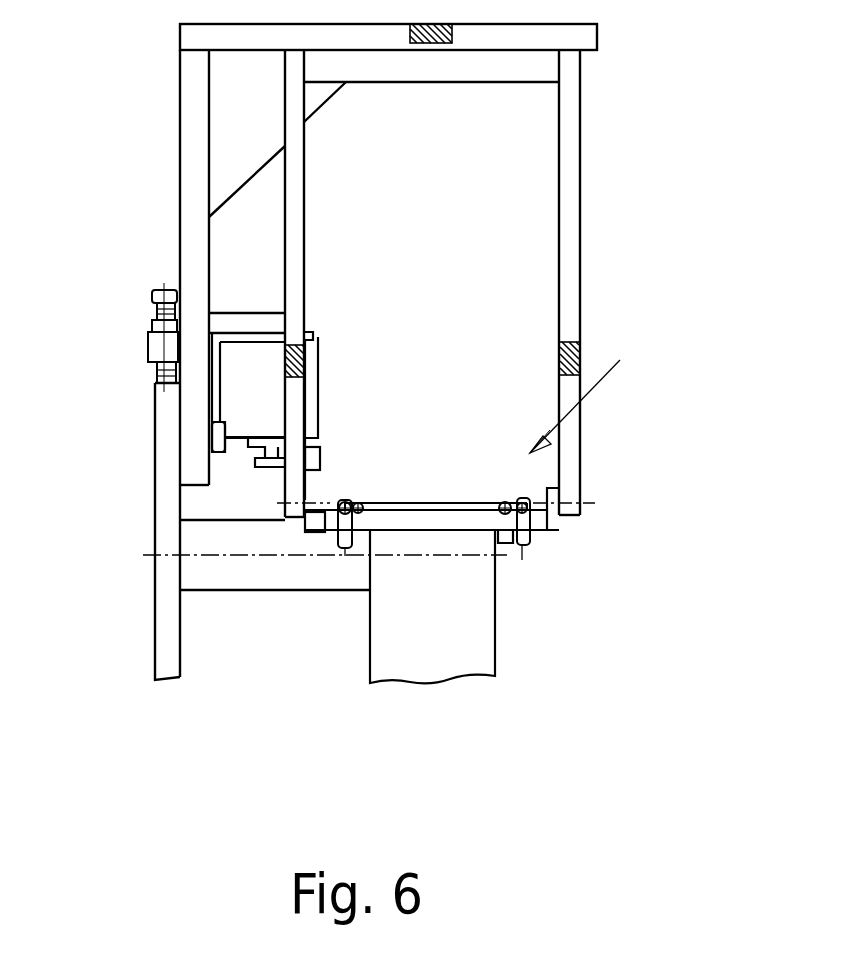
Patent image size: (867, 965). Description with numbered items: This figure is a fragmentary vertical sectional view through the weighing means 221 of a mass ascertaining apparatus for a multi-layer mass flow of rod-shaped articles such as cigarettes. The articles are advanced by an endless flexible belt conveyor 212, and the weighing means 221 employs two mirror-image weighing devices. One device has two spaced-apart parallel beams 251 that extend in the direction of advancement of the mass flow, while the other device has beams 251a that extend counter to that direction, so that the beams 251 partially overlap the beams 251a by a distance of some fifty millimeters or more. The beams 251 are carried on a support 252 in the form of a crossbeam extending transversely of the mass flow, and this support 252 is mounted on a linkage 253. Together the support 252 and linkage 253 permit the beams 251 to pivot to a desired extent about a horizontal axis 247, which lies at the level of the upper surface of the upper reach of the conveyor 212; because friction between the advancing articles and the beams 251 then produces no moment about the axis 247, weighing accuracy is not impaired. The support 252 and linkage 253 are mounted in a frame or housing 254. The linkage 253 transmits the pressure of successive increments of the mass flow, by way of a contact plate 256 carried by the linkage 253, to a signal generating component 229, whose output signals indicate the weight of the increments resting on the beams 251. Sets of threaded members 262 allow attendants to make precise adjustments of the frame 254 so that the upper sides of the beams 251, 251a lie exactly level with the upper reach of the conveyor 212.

The frame 254 is at (568, 282).
The threaded members 262 is at (152, 305).
The signal generating component 229 is at (273, 393).
The linkage 253 is at (310, 483).
The contact plate 256 is at (273, 463).
The support 252 is at (392, 518).
The beams 251 is at (505, 508).
The beams 251a is at (520, 498).
The horizontal axis 247 is at (568, 500).
The weighing means 221 is at (605, 395).
The belt conveyor 212 is at (458, 653).